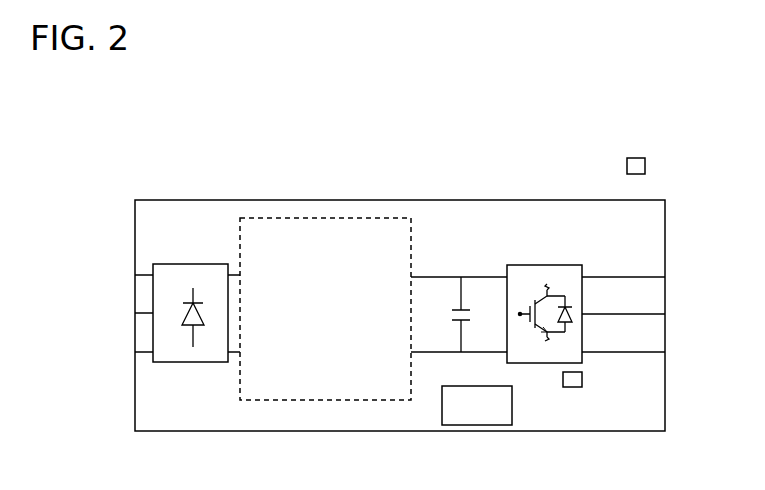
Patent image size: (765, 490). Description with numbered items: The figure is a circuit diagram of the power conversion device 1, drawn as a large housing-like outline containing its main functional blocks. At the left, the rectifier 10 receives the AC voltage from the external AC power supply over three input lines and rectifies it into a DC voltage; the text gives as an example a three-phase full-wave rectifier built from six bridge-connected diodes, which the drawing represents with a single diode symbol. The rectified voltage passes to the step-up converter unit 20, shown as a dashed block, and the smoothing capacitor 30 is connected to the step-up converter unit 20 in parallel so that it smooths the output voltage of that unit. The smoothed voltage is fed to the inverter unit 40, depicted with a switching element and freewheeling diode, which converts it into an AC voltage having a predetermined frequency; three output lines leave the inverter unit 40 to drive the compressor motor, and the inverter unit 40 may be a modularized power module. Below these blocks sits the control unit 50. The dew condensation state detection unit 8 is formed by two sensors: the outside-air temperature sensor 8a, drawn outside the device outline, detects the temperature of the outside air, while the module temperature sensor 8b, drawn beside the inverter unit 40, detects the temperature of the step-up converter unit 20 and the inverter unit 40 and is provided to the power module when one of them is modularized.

The power conversion device 1 is at (502, 200).
The rectifier 10 is at (193, 264).
The step-up converter unit 20 is at (312, 217).
The smoothing capacitor 30 is at (466, 311).
The inverter unit 40 is at (540, 265).
The control unit 50 is at (493, 426).
The dew condensation state detection unit 8 is at (590, 125).
The outside-air temperature sensor 8a is at (630, 157).
The module temperature sensor 8b is at (583, 388).